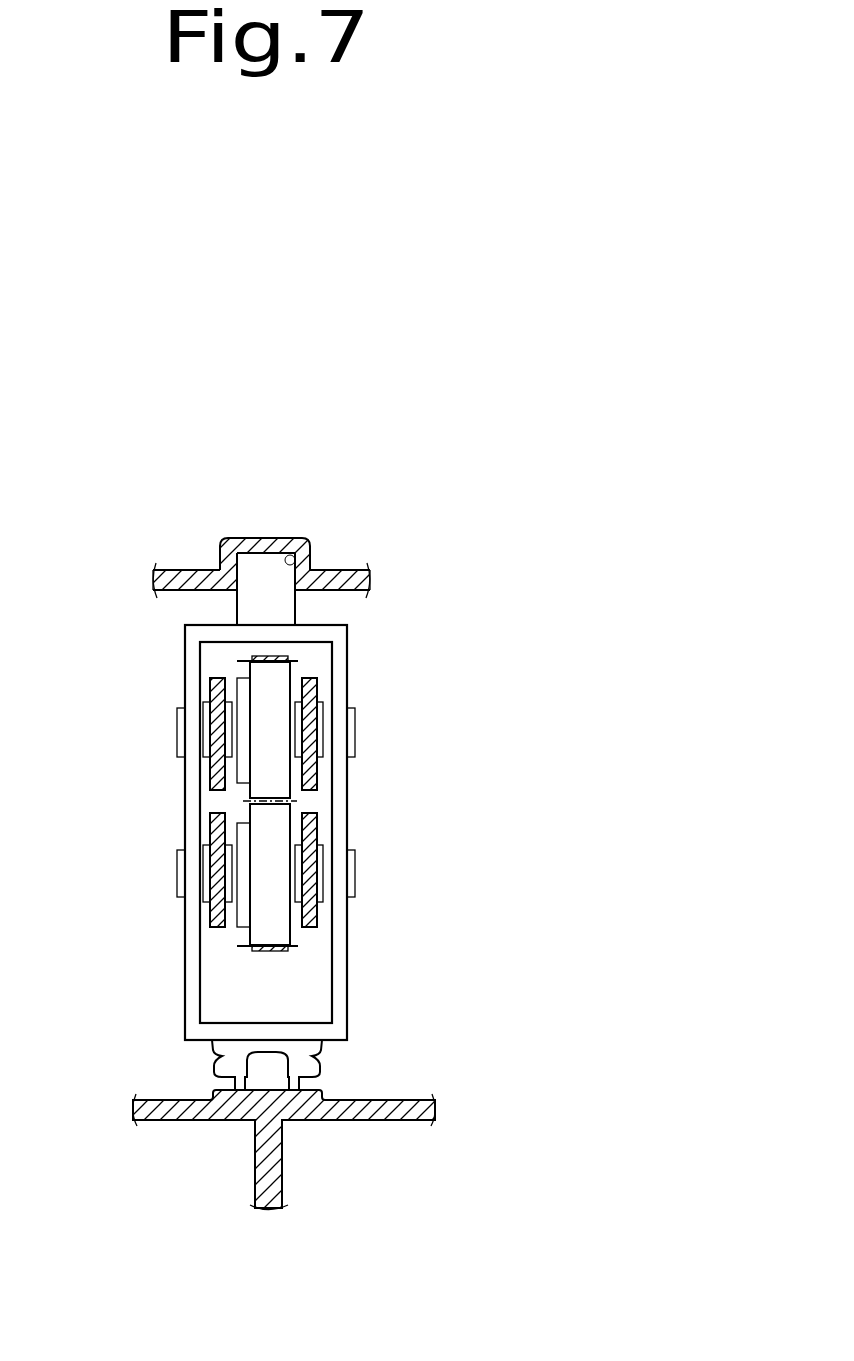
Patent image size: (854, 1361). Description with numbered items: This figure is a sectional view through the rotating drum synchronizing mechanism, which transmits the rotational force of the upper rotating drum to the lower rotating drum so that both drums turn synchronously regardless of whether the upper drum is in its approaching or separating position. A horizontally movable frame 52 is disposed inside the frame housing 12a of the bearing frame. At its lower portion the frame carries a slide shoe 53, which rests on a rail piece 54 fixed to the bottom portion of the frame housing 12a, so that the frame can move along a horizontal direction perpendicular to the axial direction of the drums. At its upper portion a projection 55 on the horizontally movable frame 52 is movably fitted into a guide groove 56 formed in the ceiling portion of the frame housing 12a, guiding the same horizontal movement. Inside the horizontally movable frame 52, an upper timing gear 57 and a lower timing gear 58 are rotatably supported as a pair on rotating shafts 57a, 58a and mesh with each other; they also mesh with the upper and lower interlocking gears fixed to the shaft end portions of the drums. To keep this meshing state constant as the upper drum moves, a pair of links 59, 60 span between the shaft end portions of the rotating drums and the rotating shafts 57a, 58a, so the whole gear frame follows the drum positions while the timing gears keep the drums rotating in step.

The frame housing 12a is at (342, 582).
The guide groove 56 is at (303, 540).
The projection 55 is at (253, 606).
The horizontally movable frame 52 is at (337, 836).
The rotating shaft 57a is at (177, 743).
The rotating shaft 58a is at (177, 876).
The link 59 is at (317, 679).
The link 60 is at (318, 818).
The upper timing gear 57 is at (267, 745).
The lower timing gear 58 is at (268, 913).
The slide shoe 53 is at (298, 1048).
The rail piece 54 is at (265, 1072).